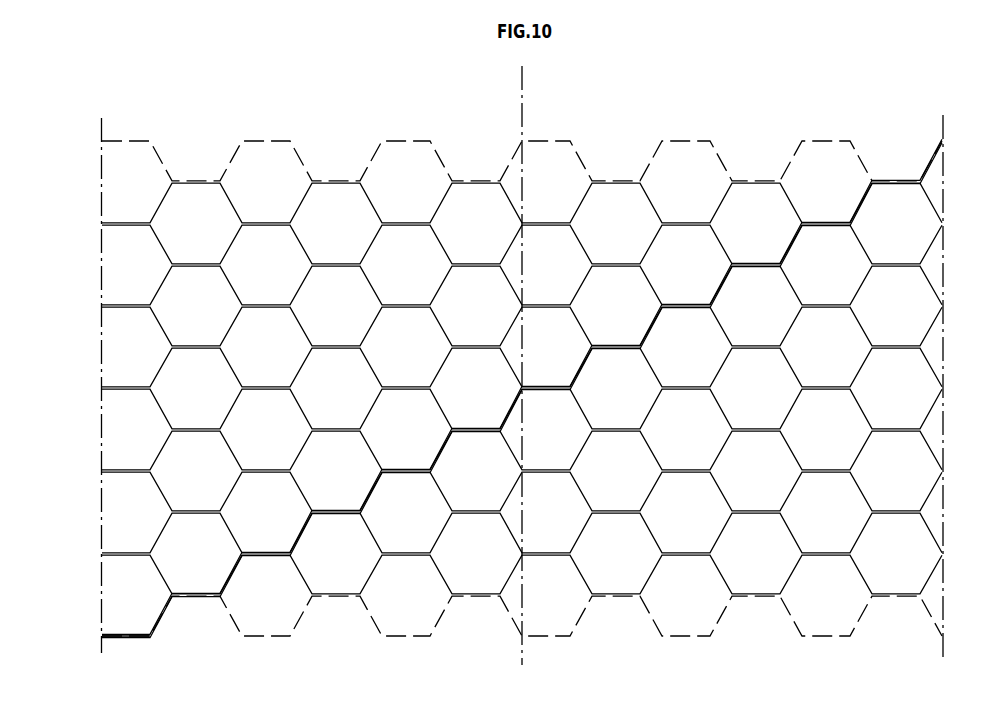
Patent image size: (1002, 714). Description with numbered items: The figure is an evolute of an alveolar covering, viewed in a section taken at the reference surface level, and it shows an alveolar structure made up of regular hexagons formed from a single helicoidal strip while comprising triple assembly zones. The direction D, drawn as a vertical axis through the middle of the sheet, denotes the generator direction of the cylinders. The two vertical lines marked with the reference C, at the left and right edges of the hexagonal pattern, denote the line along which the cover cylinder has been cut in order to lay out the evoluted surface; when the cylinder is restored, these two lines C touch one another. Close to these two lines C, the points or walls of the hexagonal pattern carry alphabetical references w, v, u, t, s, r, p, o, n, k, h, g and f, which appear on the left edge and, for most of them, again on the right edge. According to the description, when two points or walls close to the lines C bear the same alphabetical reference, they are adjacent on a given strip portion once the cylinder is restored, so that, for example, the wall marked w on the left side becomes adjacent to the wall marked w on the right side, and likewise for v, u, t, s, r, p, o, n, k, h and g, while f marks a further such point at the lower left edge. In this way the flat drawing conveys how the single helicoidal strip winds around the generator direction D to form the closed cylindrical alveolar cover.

The alphabetical reference point w is at (116, 142).
The alphabetical reference point v is at (103, 224).
The alphabetical reference point u is at (103, 224).
The alphabetical reference point t is at (103, 306).
The alphabetical reference point s is at (103, 306).
The alphabetical reference point r is at (103, 389).
The alphabetical reference point p is at (103, 389).
The alphabetical reference point o is at (103, 471).
The alphabetical reference point n is at (103, 471).
The alphabetical reference point k is at (103, 554).
The alphabetical reference point h is at (103, 554).
The alphabetical reference point g is at (103, 636).
The alphabetical reference point f is at (104, 638).
The cut line C is at (98, 655).
The generator direction D is at (527, 83).